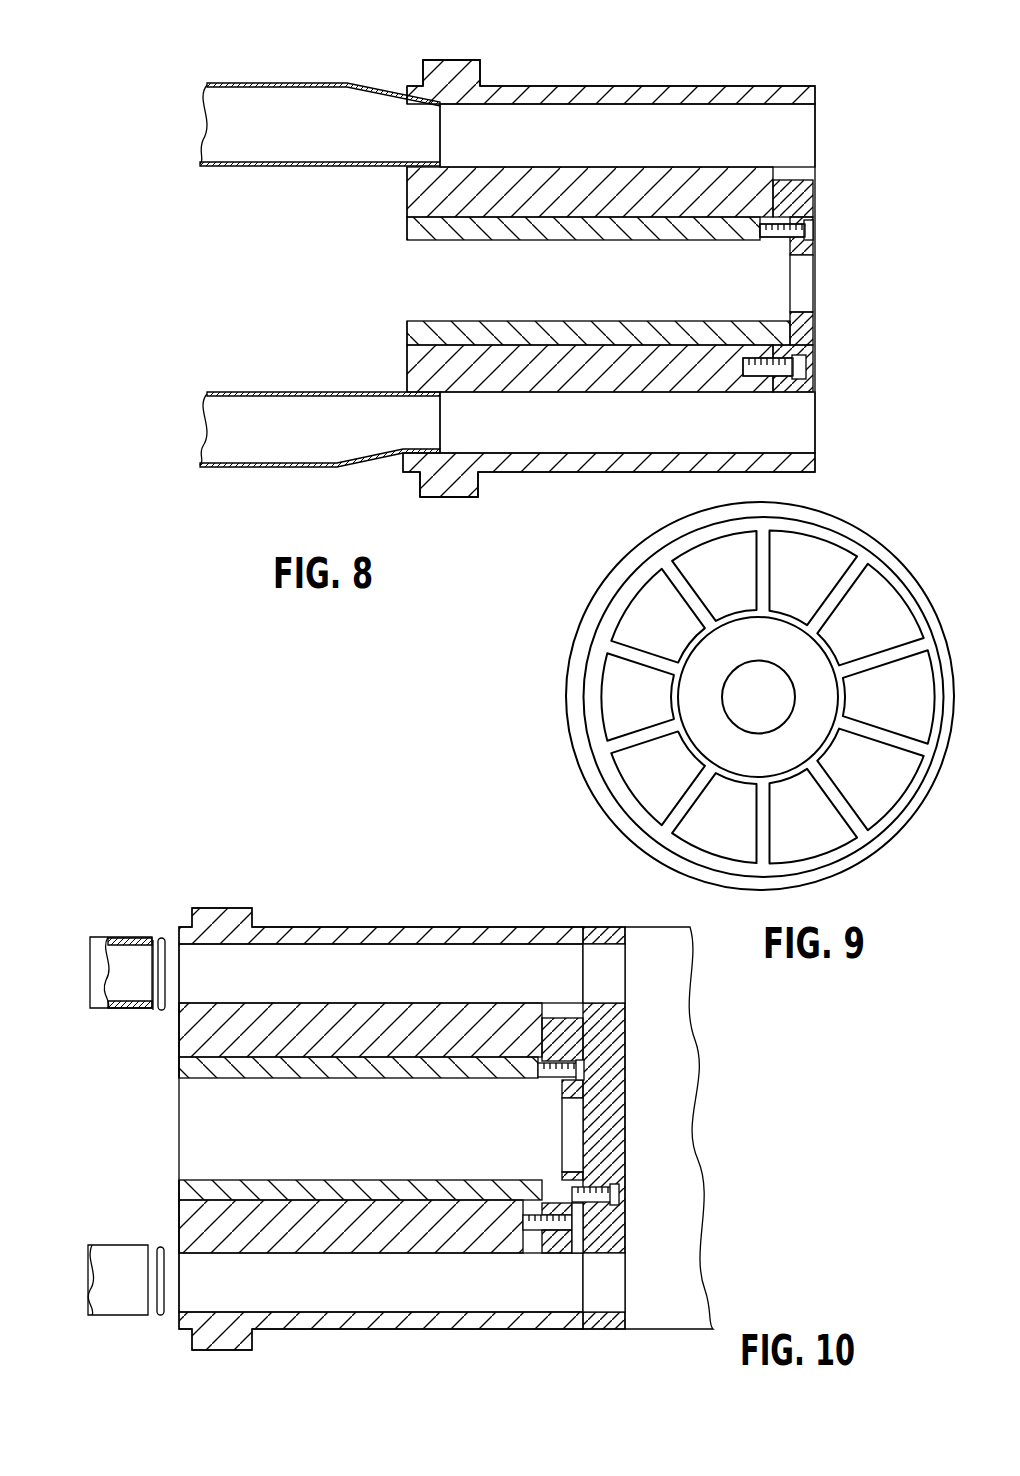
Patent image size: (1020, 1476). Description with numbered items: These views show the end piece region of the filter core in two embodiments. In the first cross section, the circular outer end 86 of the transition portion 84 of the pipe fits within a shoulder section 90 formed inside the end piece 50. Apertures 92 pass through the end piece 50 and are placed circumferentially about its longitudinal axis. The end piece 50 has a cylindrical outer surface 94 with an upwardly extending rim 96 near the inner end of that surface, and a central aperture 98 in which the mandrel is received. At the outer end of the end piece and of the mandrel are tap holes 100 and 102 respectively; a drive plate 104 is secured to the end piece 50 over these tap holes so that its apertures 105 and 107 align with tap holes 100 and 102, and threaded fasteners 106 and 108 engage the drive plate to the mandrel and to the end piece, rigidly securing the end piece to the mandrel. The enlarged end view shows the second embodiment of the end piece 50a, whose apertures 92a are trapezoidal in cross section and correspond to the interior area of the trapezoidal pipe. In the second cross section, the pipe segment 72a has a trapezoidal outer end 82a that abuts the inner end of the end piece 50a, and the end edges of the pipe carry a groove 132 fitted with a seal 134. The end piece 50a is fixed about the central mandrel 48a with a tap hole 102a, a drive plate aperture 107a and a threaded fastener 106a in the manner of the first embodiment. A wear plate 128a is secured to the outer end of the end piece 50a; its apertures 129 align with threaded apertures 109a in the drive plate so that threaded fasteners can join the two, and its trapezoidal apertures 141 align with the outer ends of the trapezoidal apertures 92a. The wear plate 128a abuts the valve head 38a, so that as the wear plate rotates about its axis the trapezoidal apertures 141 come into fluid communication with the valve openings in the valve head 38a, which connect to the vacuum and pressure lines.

In FIG. 8, the end piece 50 is at (627, 83).
In FIG. 8, the transition portion 84 is at (375, 92).
In FIG. 8, the circular outer end 86 is at (445, 133).
In FIG. 8, the shoulder section 90 is at (410, 174).
In FIG. 8, the apertures 92 is at (797, 130).
In FIG. 8, the cylindrical outer surface 94 is at (739, 85).
In FIG. 8, the rim 96 is at (482, 72).
In FIG. 8, the central aperture 98 is at (515, 200).
In FIG. 8, the tap hole 100 is at (748, 378).
In FIG. 8, the tap hole 102 is at (768, 236).
In FIG. 8, the drive plate 104 is at (818, 190).
In FIG. 8, the aperture 105 is at (780, 388).
In FIG. 8, the threaded fastener 106 is at (816, 231).
In FIG. 8, the aperture 107 is at (797, 257).
In FIG. 8, the threaded fastener 108 is at (808, 366).
In FIG. 9, the end piece 50a is at (604, 570).
In FIG. 10, the end piece 50a is at (308, 1333).
In FIG. 9, the apertures 92a is at (618, 663).
In FIG. 10, the apertures 92a is at (270, 963).
In FIG. 10, the valve head 38a is at (694, 1125).
In FIG. 10, the mandrel 48a is at (285, 1078).
In FIG. 10, the pipe segment 72a is at (105, 937).
In FIG. 10, the outer end 82a is at (181, 1058).
In FIG. 10, the tap hole 102a is at (545, 1080).
In FIG. 10, the threaded fastener 106a is at (588, 1068).
In FIG. 10, the aperture 107a is at (567, 1088).
In FIG. 10, the threaded apertures 109a is at (598, 1200).
In FIG. 10, the wear plate 128a is at (612, 1097).
In FIG. 10, the apertures 129 is at (622, 1191).
In FIG. 10, the groove 132 is at (160, 1042).
In FIG. 10, the seal 134 is at (165, 936).
In FIG. 10, the trapezoidal apertures 141 is at (614, 985).